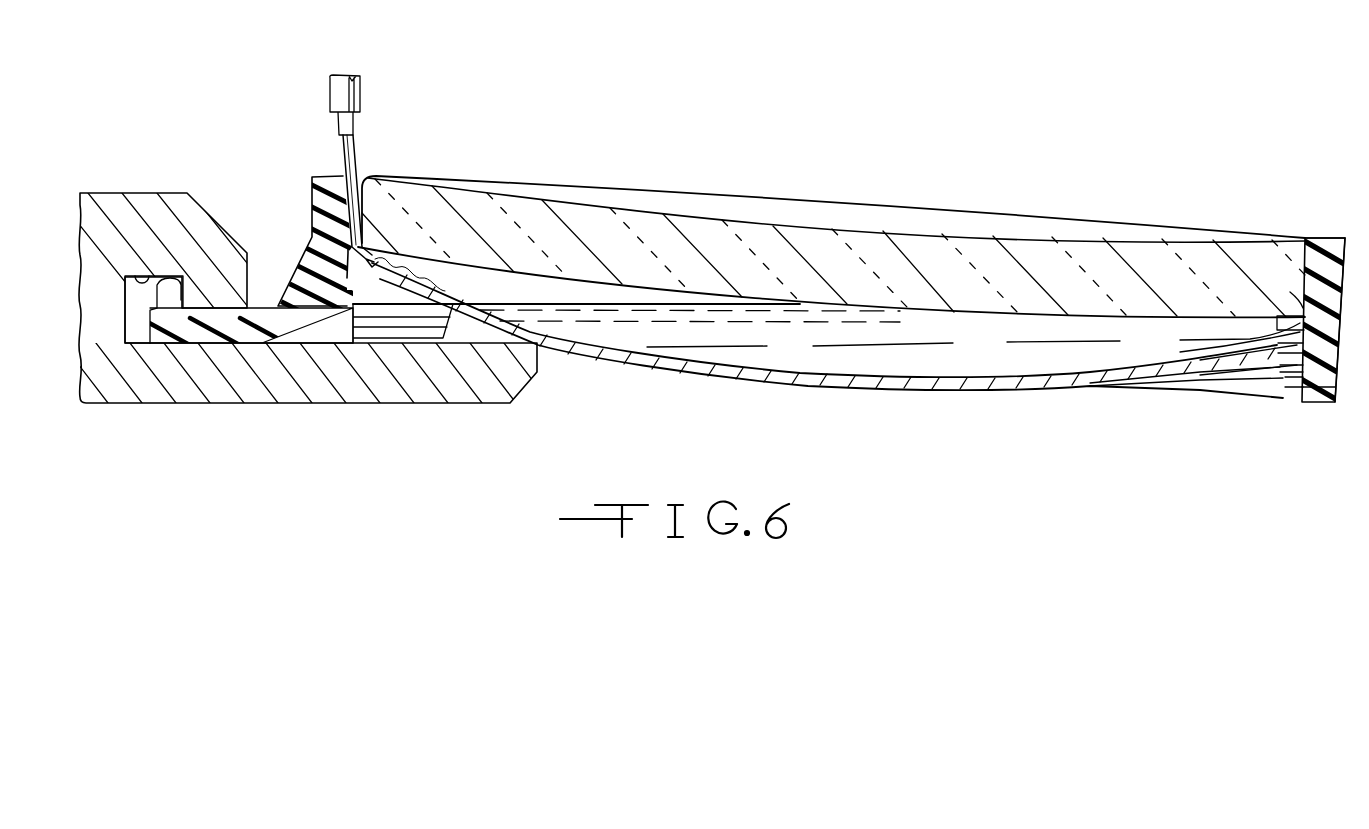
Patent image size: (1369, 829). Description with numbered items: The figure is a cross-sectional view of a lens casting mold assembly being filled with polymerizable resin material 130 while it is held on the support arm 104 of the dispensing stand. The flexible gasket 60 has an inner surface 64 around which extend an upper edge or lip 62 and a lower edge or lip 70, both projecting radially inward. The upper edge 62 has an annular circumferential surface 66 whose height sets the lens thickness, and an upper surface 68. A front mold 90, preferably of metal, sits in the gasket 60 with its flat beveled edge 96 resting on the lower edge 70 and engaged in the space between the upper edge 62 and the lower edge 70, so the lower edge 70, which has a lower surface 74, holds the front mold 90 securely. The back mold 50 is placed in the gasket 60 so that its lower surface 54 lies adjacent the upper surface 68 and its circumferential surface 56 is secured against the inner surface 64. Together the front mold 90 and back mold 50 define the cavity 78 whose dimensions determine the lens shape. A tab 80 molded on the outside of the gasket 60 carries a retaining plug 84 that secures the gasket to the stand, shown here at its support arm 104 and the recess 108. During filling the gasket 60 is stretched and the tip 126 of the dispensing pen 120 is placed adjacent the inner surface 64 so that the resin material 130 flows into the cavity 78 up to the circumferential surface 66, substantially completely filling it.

The back mold member 50 is at (859, 228).
The lower surface of the back mold 54 is at (990, 316).
The circumferential surface of the back mold 56 is at (1305, 262).
The gasket 60 is at (1345, 365).
The upper edge or lip 62 is at (1337, 243).
The inner surface of the gasket 64 is at (323, 176).
The circumferential surface of the upper edge 66 is at (1153, 341).
The upper surface of the upper edge 68 is at (1277, 313).
The lower edge or lip 70 is at (1268, 367).
The lower surface of the lower edge 74 is at (1285, 365).
The cavity 78 is at (487, 292).
The tab 80 is at (262, 306).
The retaining plug 84 is at (157, 293).
The front mold member 90 is at (792, 387).
The beveled edge of the front mold 96 is at (1322, 390).
The support arm 104 is at (167, 188).
The recess 108 is at (139, 283).
The dispensing pen 120 is at (359, 85).
The tip of the dispensing pen 126 is at (358, 152).
The polymerizable lens forming material 130 is at (452, 308).